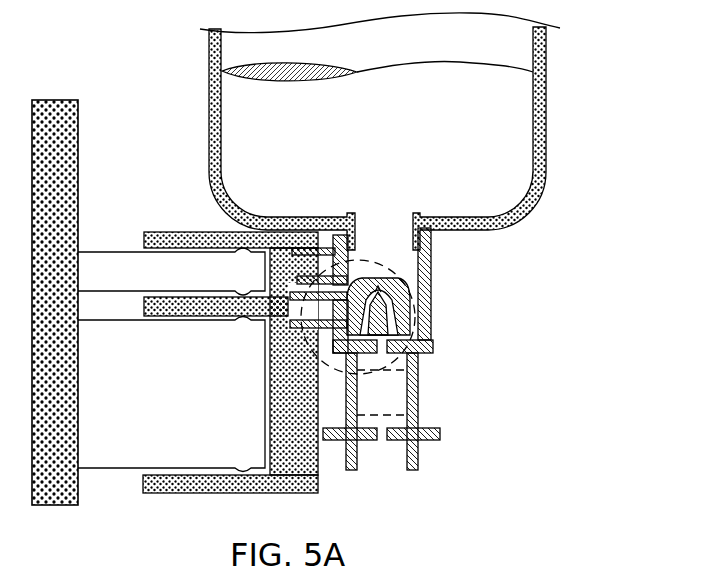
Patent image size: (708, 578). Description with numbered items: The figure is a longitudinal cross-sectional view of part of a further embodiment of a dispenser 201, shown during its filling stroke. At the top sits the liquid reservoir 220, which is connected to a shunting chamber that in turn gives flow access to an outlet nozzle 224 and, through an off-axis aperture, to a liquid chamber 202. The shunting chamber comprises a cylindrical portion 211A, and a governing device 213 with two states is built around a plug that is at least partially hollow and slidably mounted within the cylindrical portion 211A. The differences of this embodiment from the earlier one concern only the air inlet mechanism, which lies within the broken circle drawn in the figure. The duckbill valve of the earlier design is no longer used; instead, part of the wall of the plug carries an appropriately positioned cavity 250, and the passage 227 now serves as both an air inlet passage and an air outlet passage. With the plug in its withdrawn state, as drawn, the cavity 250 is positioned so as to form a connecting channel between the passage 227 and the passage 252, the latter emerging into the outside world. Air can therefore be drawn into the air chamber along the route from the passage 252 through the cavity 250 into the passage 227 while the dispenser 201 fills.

The dispenser 201 is at (587, 262).
The liquid chamber 202 is at (117, 267).
The cylindrical portion 211A is at (425, 282).
The governing device 213 is at (393, 280).
The liquid reservoir 220 is at (523, 130).
The outlet nozzle 224 is at (400, 455).
The passage 227 is at (330, 326).
The cavity 250 is at (380, 318).
The passage 252 is at (338, 336).